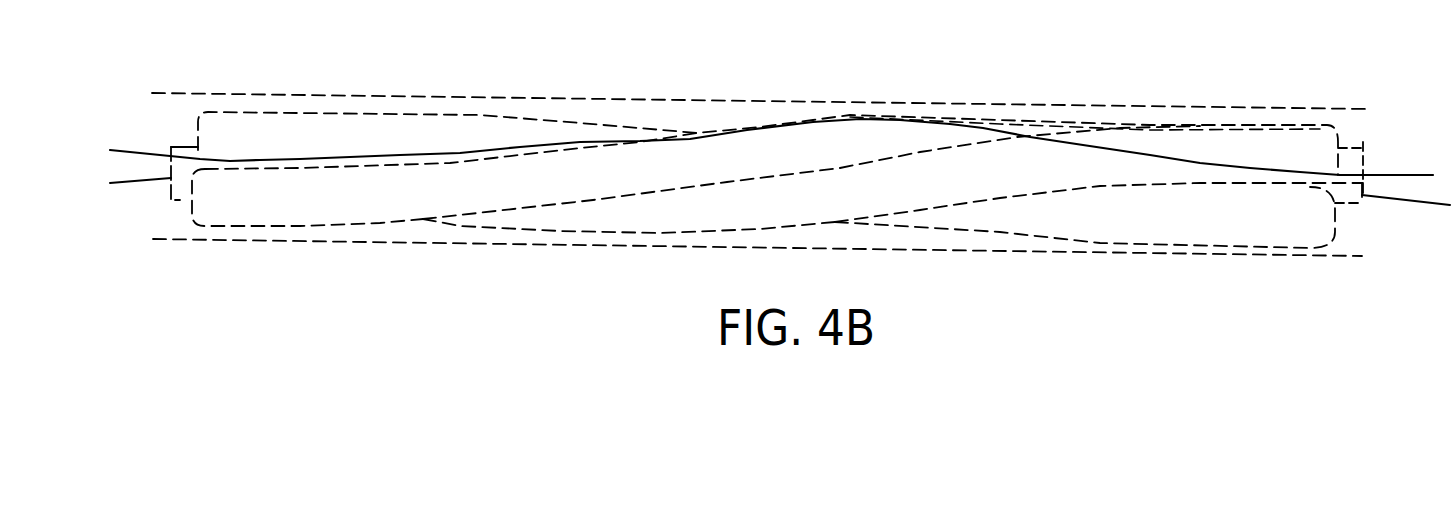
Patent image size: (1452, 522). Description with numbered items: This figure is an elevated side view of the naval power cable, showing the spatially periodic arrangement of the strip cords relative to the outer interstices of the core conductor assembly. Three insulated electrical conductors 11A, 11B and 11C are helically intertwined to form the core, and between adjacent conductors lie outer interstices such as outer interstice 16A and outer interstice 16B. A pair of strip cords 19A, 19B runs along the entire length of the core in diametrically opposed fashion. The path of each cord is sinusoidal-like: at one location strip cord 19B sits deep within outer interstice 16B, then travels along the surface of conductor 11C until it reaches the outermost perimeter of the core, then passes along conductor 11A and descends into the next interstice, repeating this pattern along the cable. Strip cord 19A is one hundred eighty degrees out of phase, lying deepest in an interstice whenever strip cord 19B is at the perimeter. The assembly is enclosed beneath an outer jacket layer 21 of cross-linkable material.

The electrical conductor 11A is at (1365, 140).
The electrical conductor 11B is at (1238, 127).
The electrical conductor 11C is at (370, 113).
The outer interstice 16A is at (259, 148).
The outer interstice 16B is at (1310, 197).
The strip cord 19A is at (143, 178).
The strip cord 19B is at (503, 148).
The outer jacket layer 21 is at (797, 100).